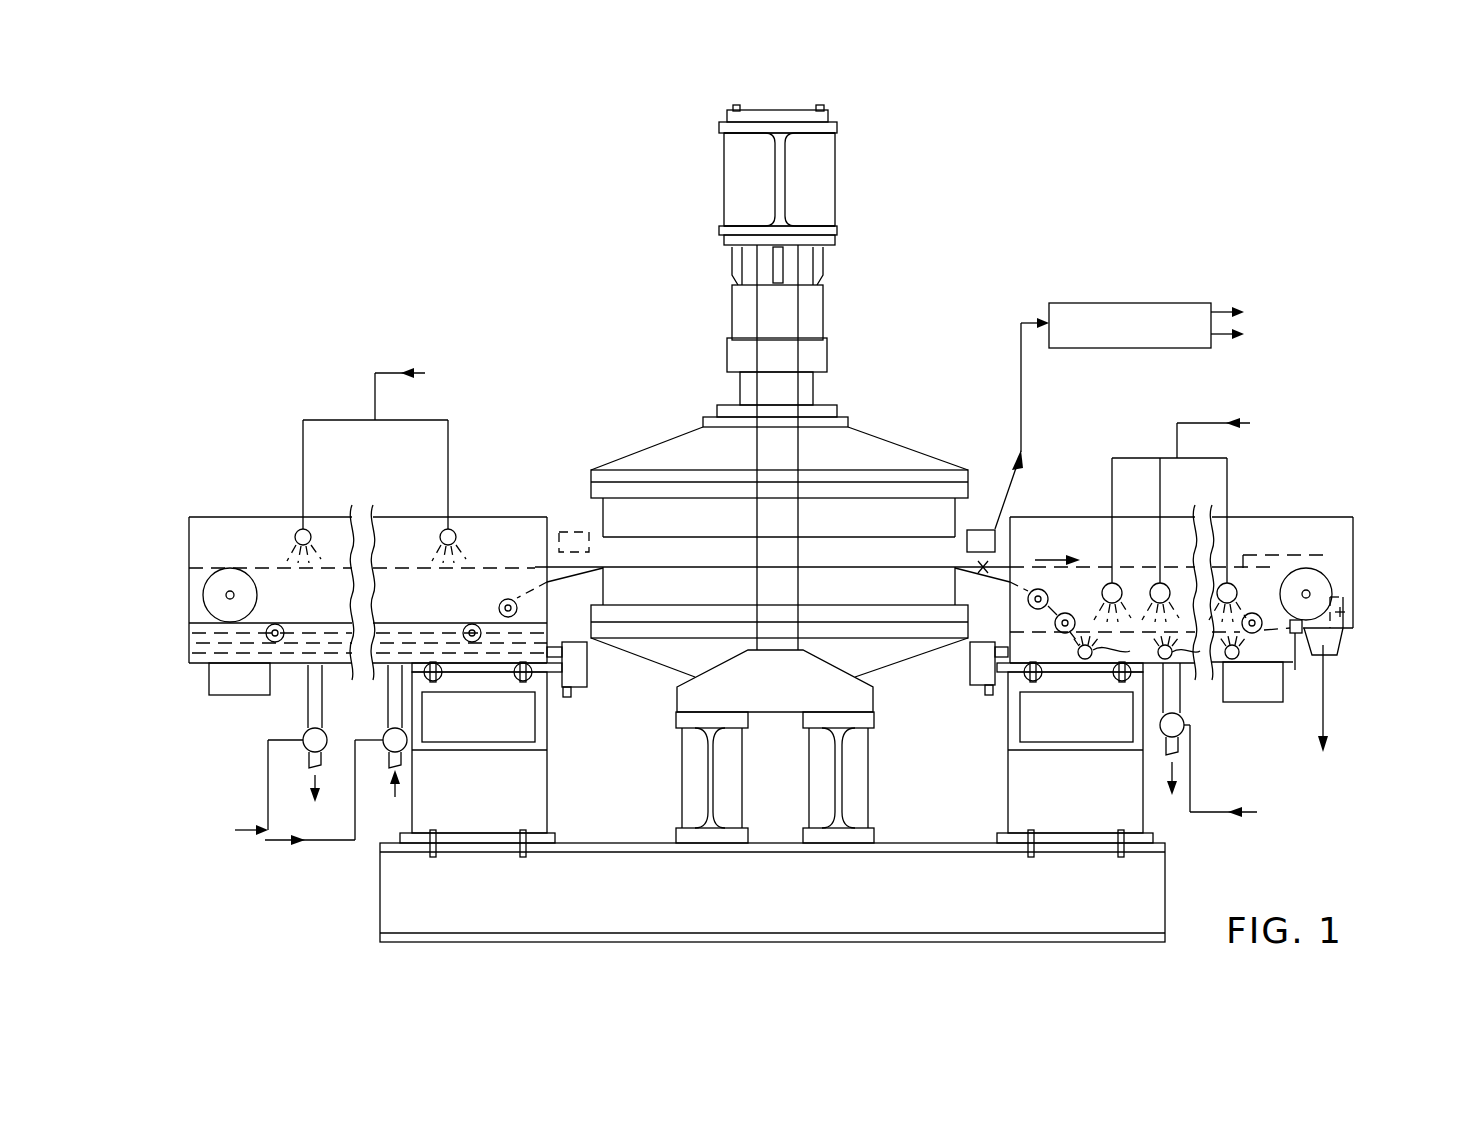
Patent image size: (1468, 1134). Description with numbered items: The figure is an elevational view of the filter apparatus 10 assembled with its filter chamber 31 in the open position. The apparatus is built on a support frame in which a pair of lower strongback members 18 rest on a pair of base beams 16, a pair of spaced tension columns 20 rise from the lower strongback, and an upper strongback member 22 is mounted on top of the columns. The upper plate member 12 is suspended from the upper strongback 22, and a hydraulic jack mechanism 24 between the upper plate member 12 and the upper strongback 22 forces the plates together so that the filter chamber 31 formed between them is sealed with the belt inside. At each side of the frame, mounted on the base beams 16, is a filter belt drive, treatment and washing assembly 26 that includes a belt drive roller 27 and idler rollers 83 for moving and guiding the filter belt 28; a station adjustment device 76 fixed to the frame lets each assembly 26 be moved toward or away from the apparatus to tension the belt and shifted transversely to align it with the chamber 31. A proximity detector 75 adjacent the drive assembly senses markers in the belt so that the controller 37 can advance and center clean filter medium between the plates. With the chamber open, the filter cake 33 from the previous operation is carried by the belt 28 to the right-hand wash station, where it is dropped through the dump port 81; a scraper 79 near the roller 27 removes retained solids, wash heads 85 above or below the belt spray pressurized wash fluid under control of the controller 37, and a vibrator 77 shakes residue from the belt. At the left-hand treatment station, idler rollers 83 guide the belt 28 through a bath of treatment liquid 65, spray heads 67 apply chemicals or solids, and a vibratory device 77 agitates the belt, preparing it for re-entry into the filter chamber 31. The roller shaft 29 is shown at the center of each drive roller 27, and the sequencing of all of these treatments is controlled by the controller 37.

The filter apparatus 10 is at (660, 389).
The upper plate member 12 is at (902, 436).
The base beams 16 is at (898, 670).
The lower strongback members 18 is at (695, 788).
The tension columns 20 is at (795, 512).
The upper strongback member 22 is at (818, 192).
The hydraulic jack mechanism 24 is at (812, 323).
The filter belt drive, treatment and washing assembly 26 is at (388, 511).
The belt drive roller 27 is at (226, 572).
The filter belt 28 is at (478, 566).
The roller shaft 29 is at (236, 596).
The filter chamber 31 is at (842, 553).
The filter cake 33 is at (1322, 558).
The controller 37 is at (1109, 302).
The liquid 65 is at (739, 642).
The spray heads 67 is at (306, 530).
The proximity detector 75 is at (574, 532).
The station adjustment device 76 is at (578, 688).
The vibrator 77 is at (238, 690).
The scraper 79 is at (1304, 657).
The dump port 81 is at (1345, 646).
The idler rollers 83 is at (283, 628).
The wash heads 85 is at (1160, 584).